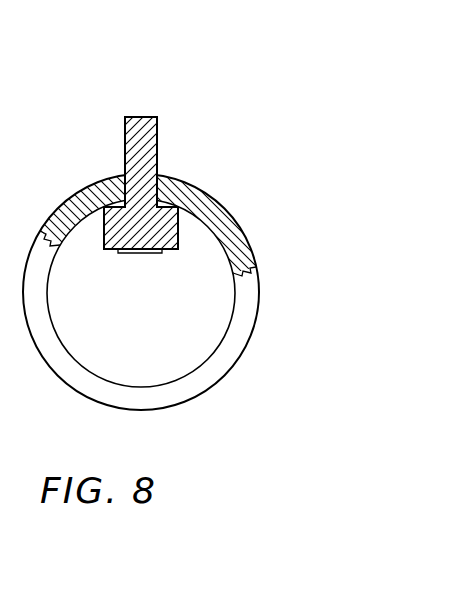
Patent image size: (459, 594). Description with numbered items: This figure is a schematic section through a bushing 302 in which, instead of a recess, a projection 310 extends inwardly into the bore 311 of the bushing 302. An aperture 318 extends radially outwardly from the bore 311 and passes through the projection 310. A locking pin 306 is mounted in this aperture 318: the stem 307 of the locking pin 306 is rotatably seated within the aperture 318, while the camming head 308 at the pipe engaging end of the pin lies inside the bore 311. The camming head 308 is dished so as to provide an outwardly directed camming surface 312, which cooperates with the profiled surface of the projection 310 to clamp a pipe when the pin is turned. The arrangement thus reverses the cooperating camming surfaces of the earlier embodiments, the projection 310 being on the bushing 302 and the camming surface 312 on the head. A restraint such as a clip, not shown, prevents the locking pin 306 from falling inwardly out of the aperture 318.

The bushing 302 is at (72, 199).
The locking pin 306 is at (153, 116).
The stem 307 is at (150, 155).
The camming head 308 is at (122, 237).
The projection 310 is at (172, 211).
The bore 311 is at (111, 381).
The camming surface 312 is at (102, 207).
The aperture 318 is at (121, 177).